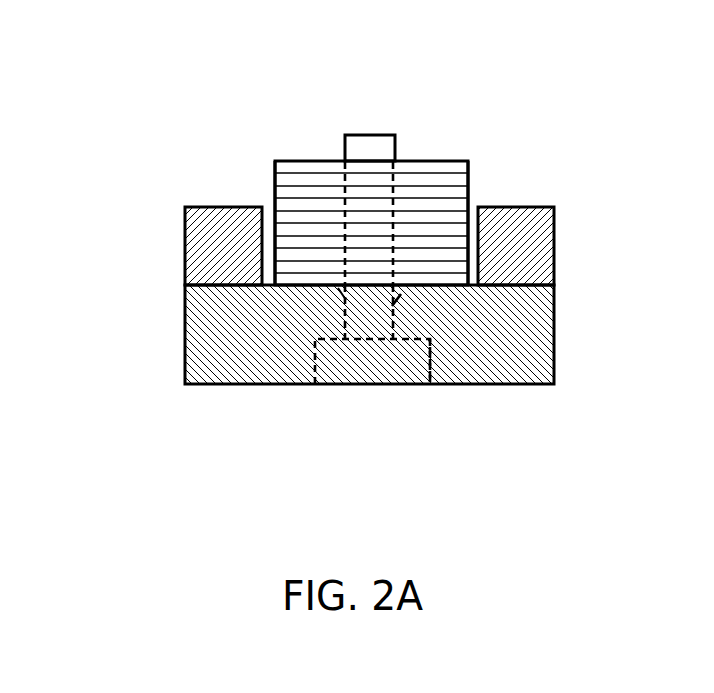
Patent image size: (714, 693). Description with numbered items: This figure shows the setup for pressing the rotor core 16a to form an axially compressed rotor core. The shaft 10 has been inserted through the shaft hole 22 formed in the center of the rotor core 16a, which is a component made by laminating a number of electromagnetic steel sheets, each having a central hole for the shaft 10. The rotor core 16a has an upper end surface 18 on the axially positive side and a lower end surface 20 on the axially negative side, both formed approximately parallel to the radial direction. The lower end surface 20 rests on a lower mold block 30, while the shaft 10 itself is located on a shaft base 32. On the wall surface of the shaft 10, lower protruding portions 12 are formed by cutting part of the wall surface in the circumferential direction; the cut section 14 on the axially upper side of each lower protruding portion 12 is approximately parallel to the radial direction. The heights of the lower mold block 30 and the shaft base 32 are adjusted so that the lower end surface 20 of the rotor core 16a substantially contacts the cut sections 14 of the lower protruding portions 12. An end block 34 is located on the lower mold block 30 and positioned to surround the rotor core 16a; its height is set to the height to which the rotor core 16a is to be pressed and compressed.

The shaft 10 is at (375, 135).
The lower protruding portion 12 is at (315, 340).
The cut section 14 is at (337, 286).
The rotor core 16a is at (261, 177).
The upper end surface 18 is at (440, 160).
The lower end surface 20 is at (438, 292).
The shaft hole 22 is at (362, 178).
The lower mold block 30 is at (185, 357).
The shaft base 32 is at (430, 357).
The end block 34 is at (185, 243).